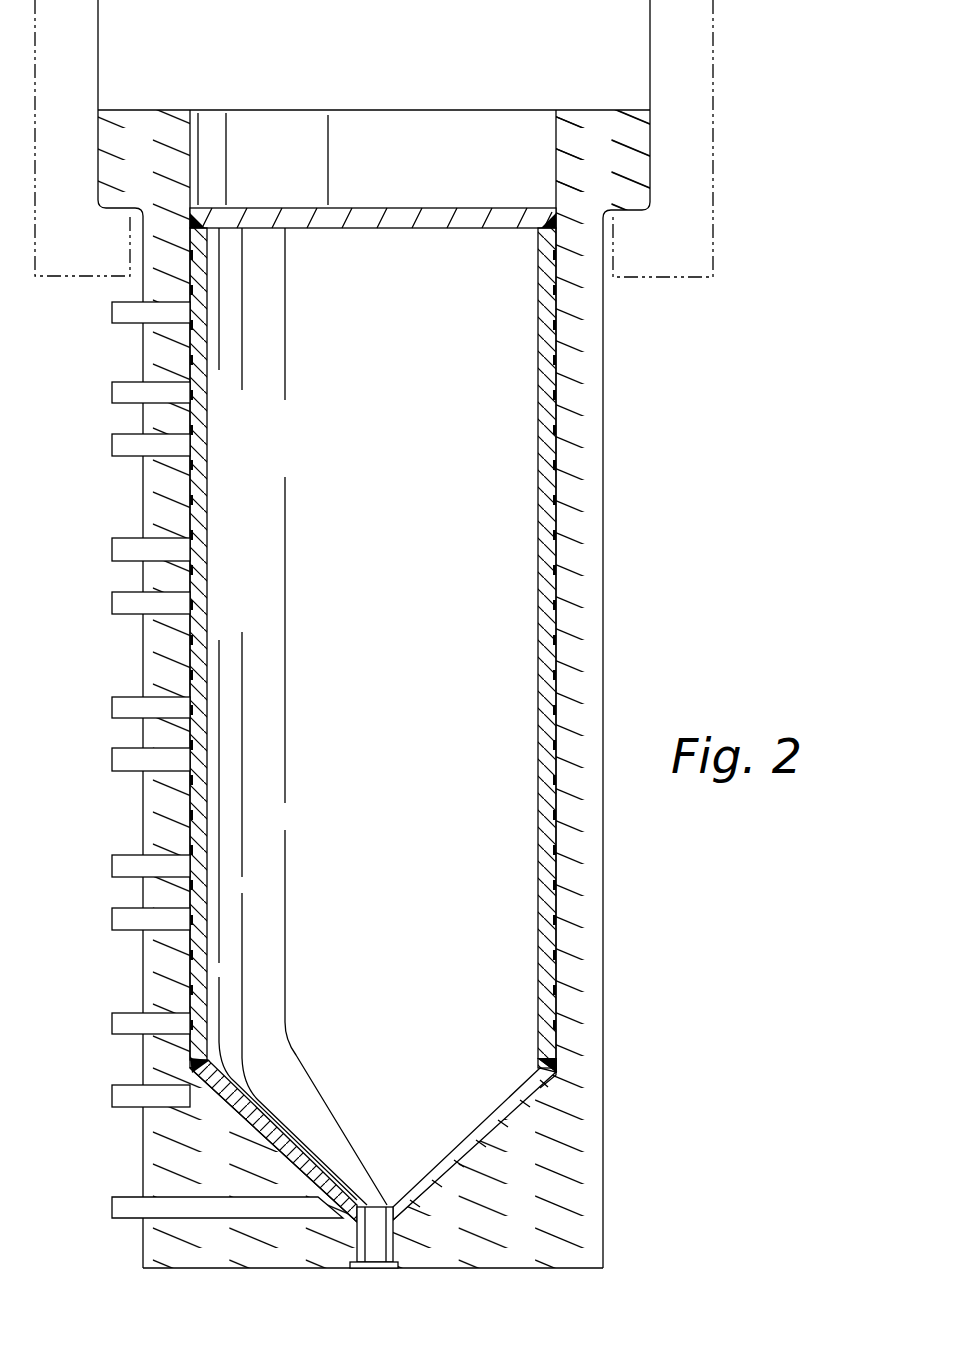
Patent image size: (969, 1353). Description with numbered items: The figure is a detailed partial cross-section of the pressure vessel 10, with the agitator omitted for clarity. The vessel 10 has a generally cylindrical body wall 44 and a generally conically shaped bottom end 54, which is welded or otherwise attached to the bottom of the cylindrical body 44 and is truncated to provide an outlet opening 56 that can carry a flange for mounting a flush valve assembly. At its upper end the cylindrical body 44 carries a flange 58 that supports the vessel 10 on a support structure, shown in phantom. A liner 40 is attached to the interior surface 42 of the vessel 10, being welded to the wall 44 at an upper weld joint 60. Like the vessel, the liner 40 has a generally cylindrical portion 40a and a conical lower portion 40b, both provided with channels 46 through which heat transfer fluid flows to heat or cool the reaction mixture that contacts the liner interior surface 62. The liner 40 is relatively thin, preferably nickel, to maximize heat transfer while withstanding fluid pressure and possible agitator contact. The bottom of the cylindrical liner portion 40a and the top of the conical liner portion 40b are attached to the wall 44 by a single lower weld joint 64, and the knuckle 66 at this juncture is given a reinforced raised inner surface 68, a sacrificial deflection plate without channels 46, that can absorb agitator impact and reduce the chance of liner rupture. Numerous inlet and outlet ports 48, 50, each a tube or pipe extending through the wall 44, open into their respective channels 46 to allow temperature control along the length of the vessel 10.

The pressure vessel 10 is at (437, 657).
The interior surface 42 is at (190, 165).
The flange 58 is at (618, 143).
The upper weld joint 60 is at (247, 218).
The inlet port 48 is at (130, 317).
The outlet port 50 is at (132, 395).
The channels 46 is at (195, 468).
The liner 40 is at (212, 610).
The cylindrical body wall 44 is at (574, 543).
The liner interior surface 62 is at (197, 672).
The knuckle 66 is at (222, 1060).
The cylindrical liner portion 40a is at (535, 883).
The reinforced raised inner surface 68 is at (538, 1063).
The lower weld joint 64 is at (556, 1075).
The conical liner portion 40b is at (487, 1115).
The conical bottom end 54 is at (516, 1123).
The outlet opening 56 is at (365, 1245).